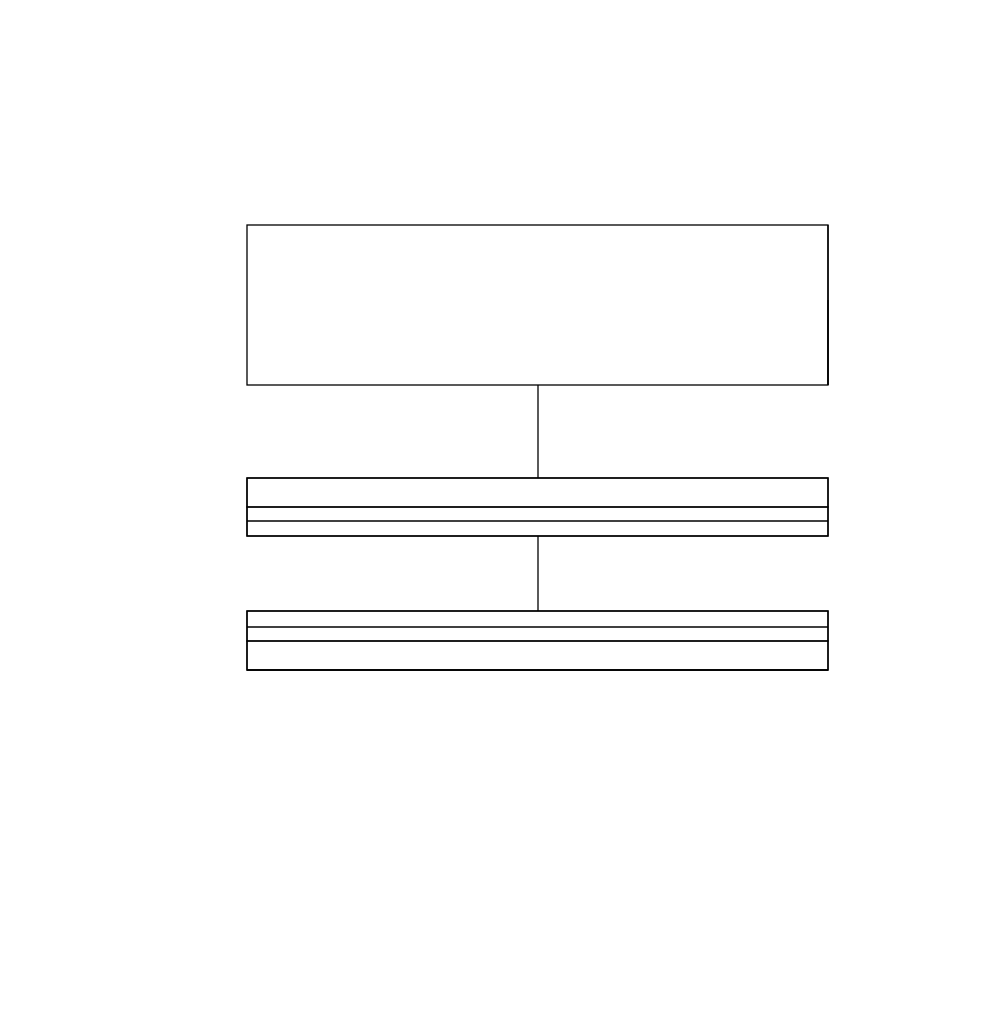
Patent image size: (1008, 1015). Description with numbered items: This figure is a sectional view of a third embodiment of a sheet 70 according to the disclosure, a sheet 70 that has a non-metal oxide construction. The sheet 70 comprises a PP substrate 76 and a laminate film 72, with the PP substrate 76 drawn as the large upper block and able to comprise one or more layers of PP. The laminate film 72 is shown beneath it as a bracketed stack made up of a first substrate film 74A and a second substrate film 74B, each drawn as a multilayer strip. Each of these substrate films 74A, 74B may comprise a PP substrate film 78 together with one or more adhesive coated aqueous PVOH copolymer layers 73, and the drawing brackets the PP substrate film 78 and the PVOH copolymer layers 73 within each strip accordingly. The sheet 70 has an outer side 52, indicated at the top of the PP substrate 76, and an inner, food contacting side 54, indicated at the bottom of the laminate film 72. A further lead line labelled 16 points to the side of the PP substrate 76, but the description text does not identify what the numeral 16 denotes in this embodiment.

The sheet 70 is at (728, 74).
The outer side 52 is at (538, 225).
The PP substrate 76 is at (828, 278).
The housing 16 is at (828, 343).
The laminate film 72 is at (120, 480).
The second substrate film 74B is at (187, 480).
The first substrate film 74A is at (187, 613).
The PP substrate film 78 is at (247, 494).
The adhesive coated aqueous PVOH copolymer layer 73 is at (238, 509).
The inner side 54 is at (538, 671).